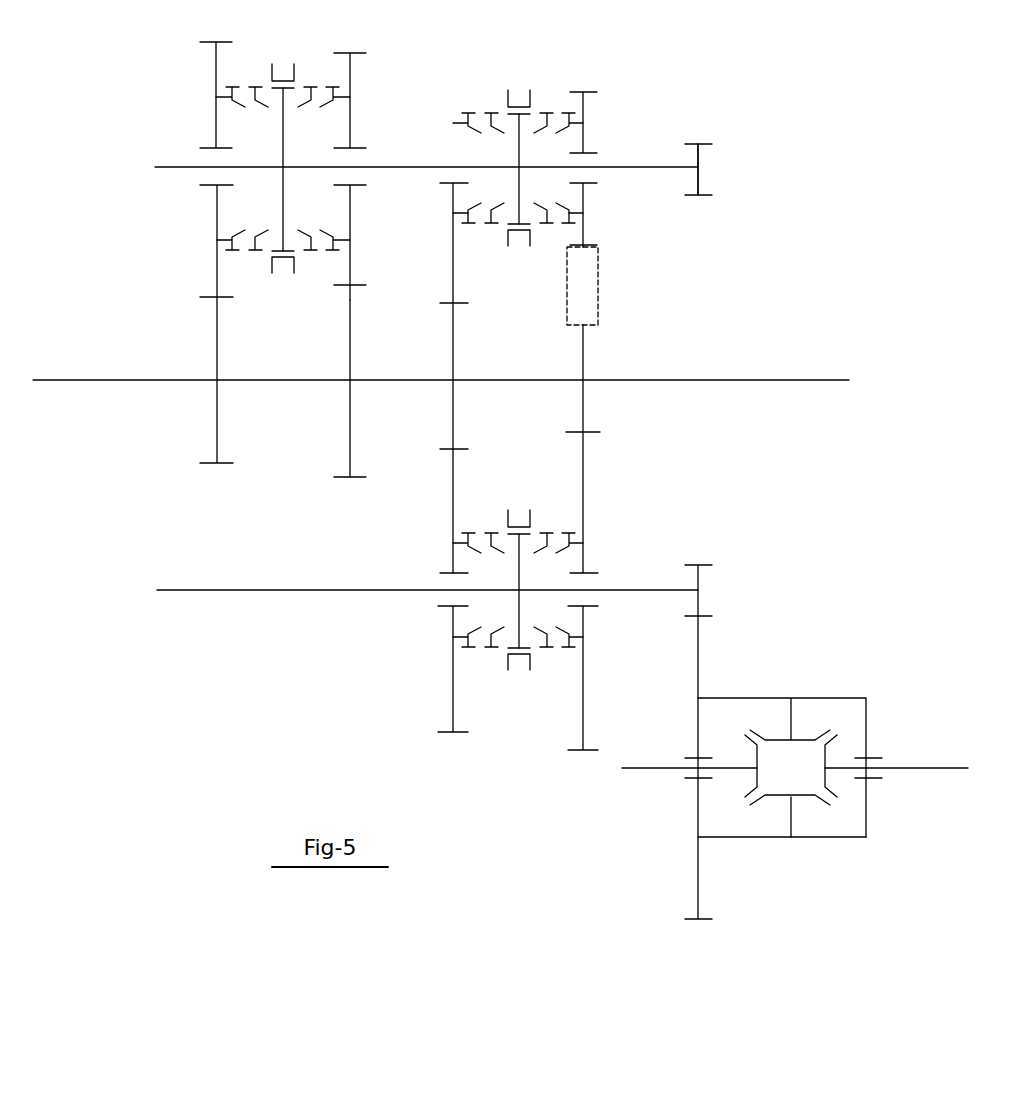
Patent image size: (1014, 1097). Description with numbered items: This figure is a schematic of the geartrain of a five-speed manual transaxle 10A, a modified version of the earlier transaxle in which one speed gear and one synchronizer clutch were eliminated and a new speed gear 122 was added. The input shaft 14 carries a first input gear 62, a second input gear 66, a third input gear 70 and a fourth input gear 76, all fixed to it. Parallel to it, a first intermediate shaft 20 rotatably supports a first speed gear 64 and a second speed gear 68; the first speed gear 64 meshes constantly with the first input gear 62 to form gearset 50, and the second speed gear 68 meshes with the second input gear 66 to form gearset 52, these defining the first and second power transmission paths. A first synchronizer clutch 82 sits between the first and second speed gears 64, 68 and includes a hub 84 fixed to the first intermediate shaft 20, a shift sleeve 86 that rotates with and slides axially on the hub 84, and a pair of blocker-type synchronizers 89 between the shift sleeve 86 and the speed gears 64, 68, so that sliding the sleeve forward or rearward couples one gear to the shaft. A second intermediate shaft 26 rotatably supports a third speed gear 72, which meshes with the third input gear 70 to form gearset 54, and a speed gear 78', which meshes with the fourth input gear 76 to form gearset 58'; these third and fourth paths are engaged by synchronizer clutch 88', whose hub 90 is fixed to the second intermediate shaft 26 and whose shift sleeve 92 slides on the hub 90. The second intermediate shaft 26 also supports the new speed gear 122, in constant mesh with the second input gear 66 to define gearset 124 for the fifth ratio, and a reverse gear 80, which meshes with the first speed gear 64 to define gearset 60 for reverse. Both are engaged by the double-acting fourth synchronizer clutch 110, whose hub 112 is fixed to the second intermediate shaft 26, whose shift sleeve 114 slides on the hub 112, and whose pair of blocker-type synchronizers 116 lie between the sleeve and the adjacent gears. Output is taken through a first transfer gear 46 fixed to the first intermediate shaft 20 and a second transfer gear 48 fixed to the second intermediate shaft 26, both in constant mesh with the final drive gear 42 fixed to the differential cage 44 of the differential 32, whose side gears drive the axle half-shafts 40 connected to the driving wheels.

The third speed gear 72 is at (216, 63).
The shift sleeve 92 is at (293, 63).
The synchronizer clutch 88' is at (304, 68).
The speed gear 78' is at (380, 100).
The fourth synchronizer clutch 110 is at (502, 90).
The shift sleeve 114 is at (523, 85).
The hub 112 is at (519, 138).
The reverse gear 80 is at (585, 92).
The second intermediate shaft 26 is at (652, 165).
The second transfer gear 48 is at (705, 143).
The transaxle 10A is at (748, 197).
The hub 90 is at (283, 211).
The speed gear 122 is at (481, 257).
The blocker-type synchronizers 116 is at (553, 235).
The gearset 54 is at (190, 282).
The gearset 58' is at (381, 242).
The gearset 60 is at (612, 232).
The first speed gear 64 is at (587, 280).
The input shaft 14 is at (750, 377).
The third input gear 70 is at (217, 323).
The fourth input gear 76 is at (381, 331).
The gearset 124 is at (448, 305).
The second input gear 66 is at (455, 378).
The gearset 52 is at (430, 452).
The first input gear 62 is at (583, 350).
The gearset 50 is at (569, 486).
The blocker-type synchronizers 89 is at (543, 517).
The hub 84 is at (519, 565).
The first intermediate shaft 20 is at (628, 588).
The first transfer gear 46 is at (700, 565).
The final drive gear 42 is at (698, 643).
The differential 32 is at (805, 745).
The differential cage 44 is at (820, 838).
The axle half-shafts 40 is at (643, 767).
The second speed gear 68 is at (453, 663).
The first synchronizer clutch 82 is at (527, 690).
The shift sleeve 86 is at (527, 660).